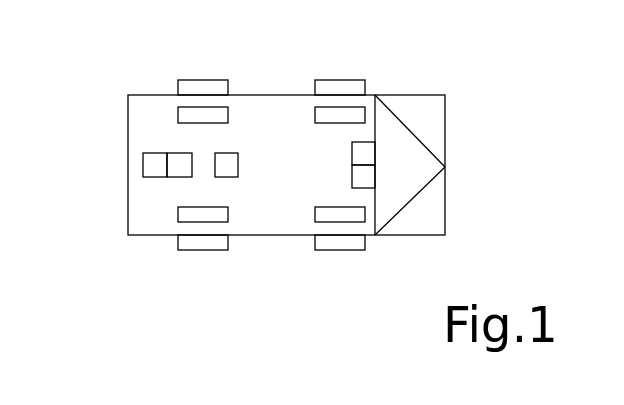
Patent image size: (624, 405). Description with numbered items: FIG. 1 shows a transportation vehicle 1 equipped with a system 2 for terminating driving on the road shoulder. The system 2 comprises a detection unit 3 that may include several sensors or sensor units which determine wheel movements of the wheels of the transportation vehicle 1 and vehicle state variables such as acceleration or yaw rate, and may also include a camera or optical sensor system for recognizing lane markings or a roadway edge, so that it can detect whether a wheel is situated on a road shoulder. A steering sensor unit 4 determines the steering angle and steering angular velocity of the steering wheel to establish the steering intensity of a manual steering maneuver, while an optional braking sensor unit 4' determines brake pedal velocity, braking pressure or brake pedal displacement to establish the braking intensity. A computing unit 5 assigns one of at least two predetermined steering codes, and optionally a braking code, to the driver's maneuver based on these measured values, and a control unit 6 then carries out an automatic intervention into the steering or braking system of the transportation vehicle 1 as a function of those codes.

The transportation vehicle 1 is at (96, 168).
The system 2 is at (445, 53).
The detection unit 3 is at (350, 208).
The steering sensor unit 4 is at (389, 110).
The braking sensor unit 4' is at (391, 224).
The computing unit 5 is at (178, 163).
The control unit 6 is at (157, 163).